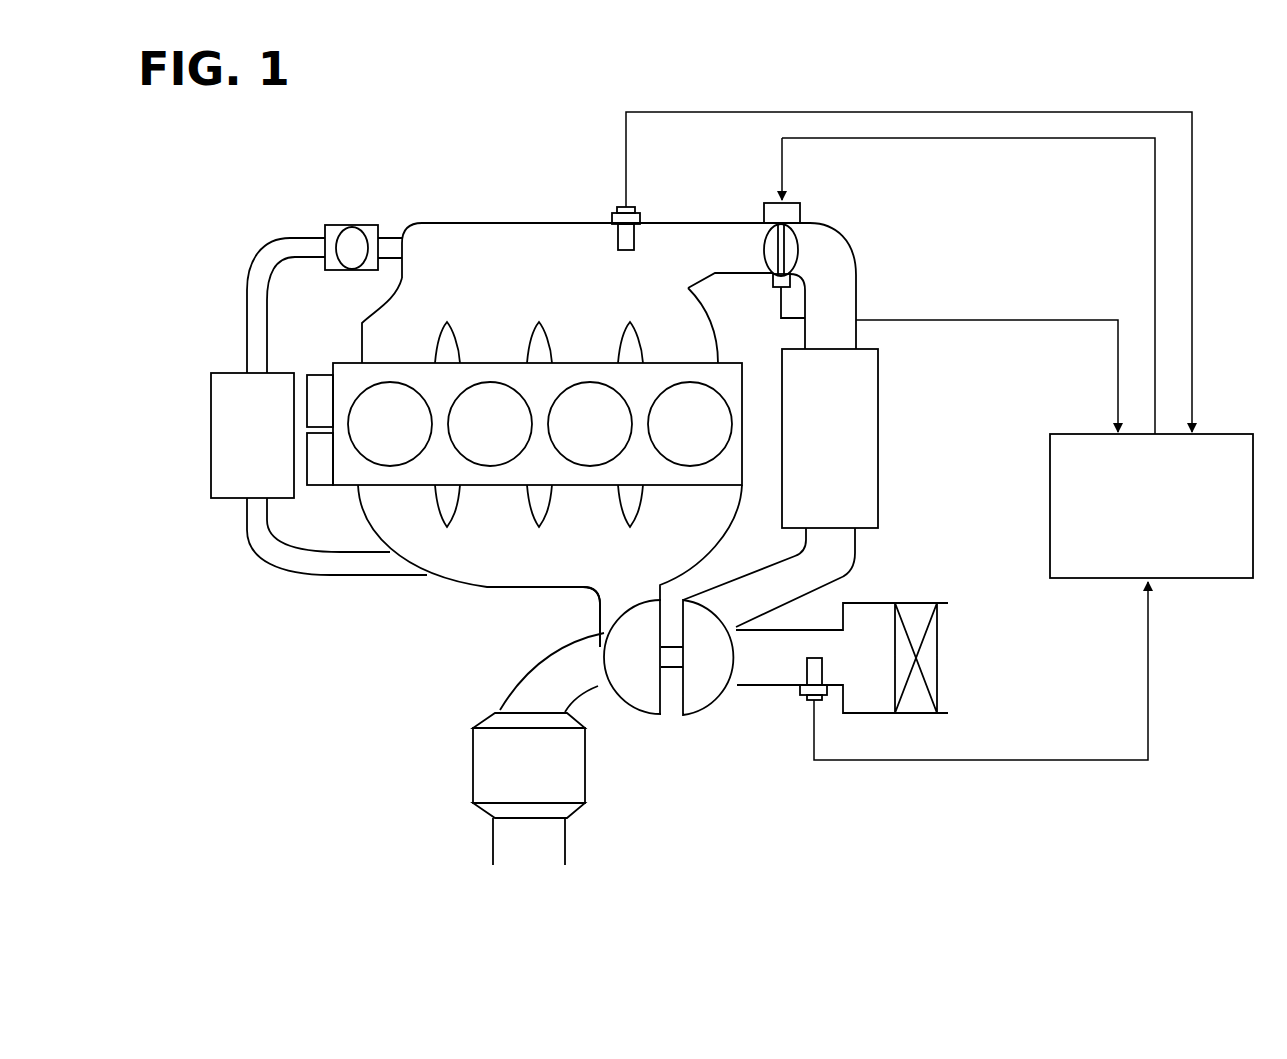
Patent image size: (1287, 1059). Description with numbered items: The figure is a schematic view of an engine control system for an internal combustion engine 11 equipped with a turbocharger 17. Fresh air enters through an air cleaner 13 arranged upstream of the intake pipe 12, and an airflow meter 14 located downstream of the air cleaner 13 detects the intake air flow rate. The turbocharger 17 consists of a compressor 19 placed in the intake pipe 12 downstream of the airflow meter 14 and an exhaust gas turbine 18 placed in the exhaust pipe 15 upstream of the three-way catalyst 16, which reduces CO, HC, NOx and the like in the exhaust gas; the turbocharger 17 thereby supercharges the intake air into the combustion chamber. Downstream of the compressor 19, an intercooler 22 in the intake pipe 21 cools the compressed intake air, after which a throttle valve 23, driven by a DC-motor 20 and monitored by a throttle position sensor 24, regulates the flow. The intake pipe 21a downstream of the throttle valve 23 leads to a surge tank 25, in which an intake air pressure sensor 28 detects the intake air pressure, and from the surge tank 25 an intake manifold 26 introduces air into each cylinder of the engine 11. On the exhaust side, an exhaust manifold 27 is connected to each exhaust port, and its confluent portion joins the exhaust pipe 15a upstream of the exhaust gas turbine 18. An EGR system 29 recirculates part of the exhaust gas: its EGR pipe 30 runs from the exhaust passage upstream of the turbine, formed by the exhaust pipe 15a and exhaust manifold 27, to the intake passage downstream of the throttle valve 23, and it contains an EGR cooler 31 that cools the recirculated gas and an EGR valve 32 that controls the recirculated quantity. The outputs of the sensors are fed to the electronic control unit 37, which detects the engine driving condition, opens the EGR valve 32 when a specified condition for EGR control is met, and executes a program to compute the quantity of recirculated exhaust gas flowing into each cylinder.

The internal combustion engine 11 is at (517, 218).
The intake pipe 12 is at (757, 690).
The air cleaner 13 is at (948, 655).
The airflow meter 14 is at (805, 675).
The exhaust pipe 15 is at (500, 670).
The exhaust pipe upstream of the exhaust gas turbine 15a is at (598, 605).
The three-way catalyst 16 is at (473, 767).
The turbocharger 17 is at (670, 732).
The exhaust gas turbine 18 is at (604, 658).
The compressor 19 is at (700, 717).
The DC-motor 20 is at (800, 212).
The intake pipe downstream of the compressor 21 is at (857, 290).
The intake pipe downstream of the throttle valve 21a is at (740, 222).
The intercooler 22 is at (878, 435).
The throttle valve 23 is at (800, 250).
The throttle position sensor 24 is at (773, 281).
The surge tank 25 is at (553, 223).
The intake manifold 26 is at (365, 312).
The exhaust manifold 27 is at (430, 575).
The intake air pressure sensor 28 is at (617, 238).
The EGR system 29 is at (312, 213).
The EGR pipe 30 is at (247, 303).
The EGR cooler 31 is at (211, 435).
The EGR valve 32 is at (352, 226).
The electronic control unit (ECU) 37 is at (1220, 433).